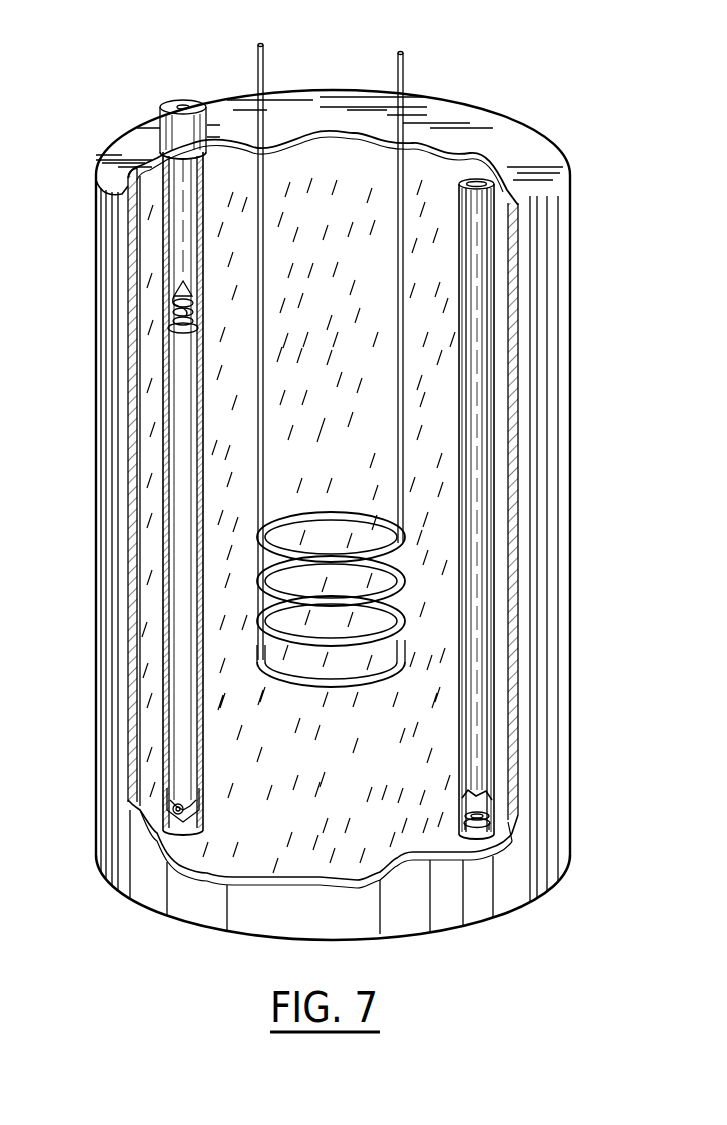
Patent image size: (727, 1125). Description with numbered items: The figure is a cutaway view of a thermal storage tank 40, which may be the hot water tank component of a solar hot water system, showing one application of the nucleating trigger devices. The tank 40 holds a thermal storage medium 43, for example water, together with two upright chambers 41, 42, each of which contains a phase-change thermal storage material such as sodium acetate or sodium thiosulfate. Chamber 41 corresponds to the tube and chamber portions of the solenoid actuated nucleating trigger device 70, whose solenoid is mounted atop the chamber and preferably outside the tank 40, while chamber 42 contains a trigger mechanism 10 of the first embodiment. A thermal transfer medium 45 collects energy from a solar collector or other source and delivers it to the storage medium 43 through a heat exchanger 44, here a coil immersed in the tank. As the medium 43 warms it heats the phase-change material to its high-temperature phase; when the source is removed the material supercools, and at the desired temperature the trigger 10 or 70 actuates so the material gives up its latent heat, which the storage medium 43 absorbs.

The trigger mechanism 10 is at (488, 808).
The thermal storage tank 40 is at (478, 97).
The chamber 41 is at (150, 147).
The chamber 42 is at (502, 233).
The thermal storage medium 43 is at (434, 416).
The heat exchanger 44 is at (405, 598).
The thermal transfer medium 45 is at (260, 6).
The solenoid actuated nucleating trigger device 70 is at (174, 808).